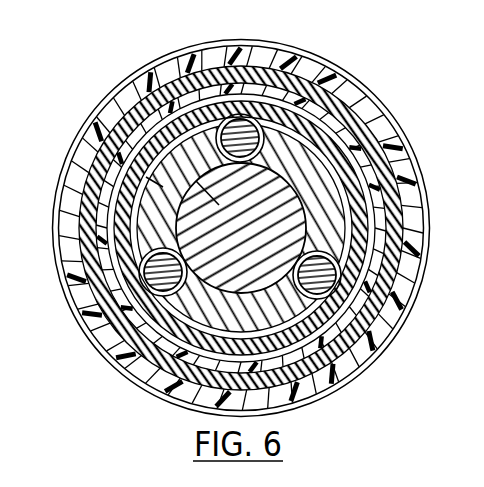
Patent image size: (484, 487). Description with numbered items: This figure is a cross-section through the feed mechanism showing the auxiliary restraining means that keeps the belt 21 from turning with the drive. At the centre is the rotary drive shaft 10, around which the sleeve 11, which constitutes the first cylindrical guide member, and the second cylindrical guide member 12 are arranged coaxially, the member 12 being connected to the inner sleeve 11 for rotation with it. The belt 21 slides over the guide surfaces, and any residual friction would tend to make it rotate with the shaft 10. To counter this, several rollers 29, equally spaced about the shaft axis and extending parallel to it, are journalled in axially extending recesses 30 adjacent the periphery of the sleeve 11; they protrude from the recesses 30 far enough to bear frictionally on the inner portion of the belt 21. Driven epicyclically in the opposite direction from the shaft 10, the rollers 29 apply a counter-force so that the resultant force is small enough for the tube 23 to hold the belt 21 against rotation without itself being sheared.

The rotary drive shaft 10 is at (129, 98).
The sleeve 11 is at (110, 134).
The second cylindrical guide member 12 is at (376, 186).
The belt 21 is at (120, 206).
The tube 23 is at (306, 68).
The rollers 29 is at (247, 113).
The axially extending recesses 30 is at (206, 66).